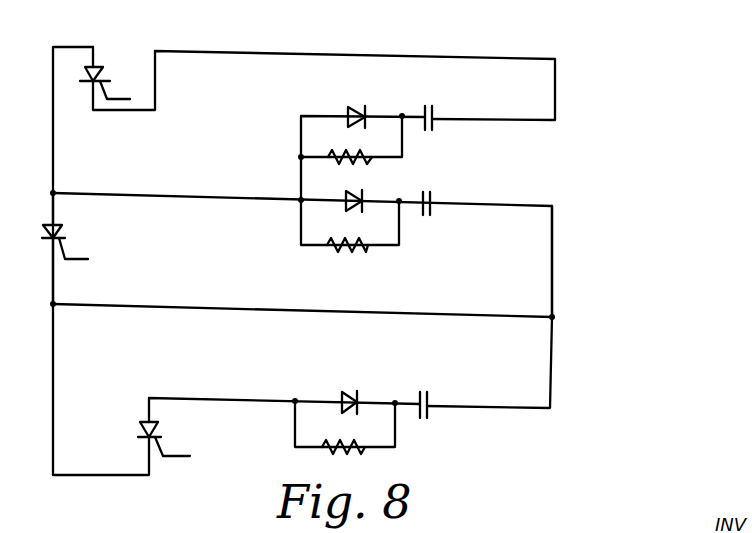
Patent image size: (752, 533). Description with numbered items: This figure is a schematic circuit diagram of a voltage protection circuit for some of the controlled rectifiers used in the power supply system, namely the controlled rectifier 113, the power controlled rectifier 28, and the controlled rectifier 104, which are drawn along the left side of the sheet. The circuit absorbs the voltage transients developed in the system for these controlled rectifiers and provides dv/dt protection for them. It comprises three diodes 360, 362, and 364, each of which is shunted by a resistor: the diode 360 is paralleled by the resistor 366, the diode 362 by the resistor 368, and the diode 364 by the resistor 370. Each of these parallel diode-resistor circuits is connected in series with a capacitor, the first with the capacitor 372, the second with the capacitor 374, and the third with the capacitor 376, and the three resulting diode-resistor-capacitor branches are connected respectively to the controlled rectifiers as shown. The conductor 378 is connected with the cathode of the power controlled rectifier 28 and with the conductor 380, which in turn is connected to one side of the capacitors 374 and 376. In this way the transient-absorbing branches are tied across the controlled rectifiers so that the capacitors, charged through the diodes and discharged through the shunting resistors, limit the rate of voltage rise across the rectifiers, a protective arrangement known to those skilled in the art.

The controlled rectifier 113 is at (103, 70).
The power controlled rectifier 28 is at (63, 229).
The controlled rectifier 104 is at (145, 420).
The diode 360 is at (363, 104).
The diode 362 is at (345, 193).
The diode 364 is at (344, 393).
The resistor 366 is at (372, 160).
The resistor 368 is at (355, 250).
The resistor 370 is at (330, 445).
The capacitor 372 is at (433, 110).
The capacitor 374 is at (432, 213).
The capacitor 376 is at (428, 398).
The conductor 378 is at (167, 304).
The conductor 380 is at (553, 265).